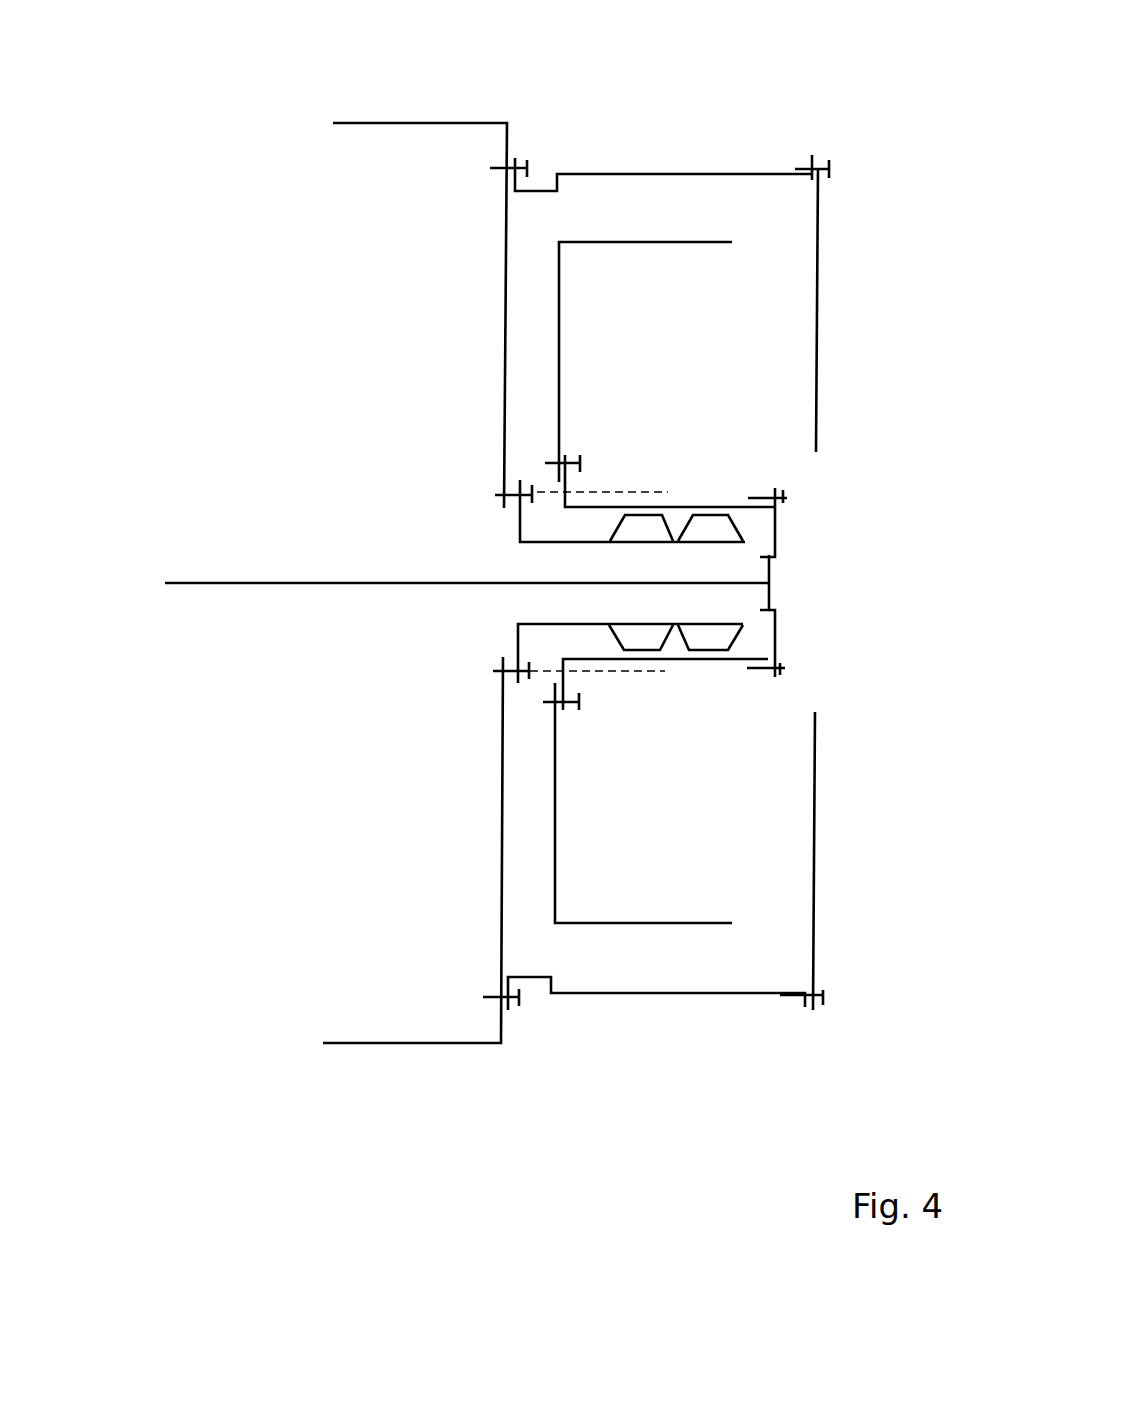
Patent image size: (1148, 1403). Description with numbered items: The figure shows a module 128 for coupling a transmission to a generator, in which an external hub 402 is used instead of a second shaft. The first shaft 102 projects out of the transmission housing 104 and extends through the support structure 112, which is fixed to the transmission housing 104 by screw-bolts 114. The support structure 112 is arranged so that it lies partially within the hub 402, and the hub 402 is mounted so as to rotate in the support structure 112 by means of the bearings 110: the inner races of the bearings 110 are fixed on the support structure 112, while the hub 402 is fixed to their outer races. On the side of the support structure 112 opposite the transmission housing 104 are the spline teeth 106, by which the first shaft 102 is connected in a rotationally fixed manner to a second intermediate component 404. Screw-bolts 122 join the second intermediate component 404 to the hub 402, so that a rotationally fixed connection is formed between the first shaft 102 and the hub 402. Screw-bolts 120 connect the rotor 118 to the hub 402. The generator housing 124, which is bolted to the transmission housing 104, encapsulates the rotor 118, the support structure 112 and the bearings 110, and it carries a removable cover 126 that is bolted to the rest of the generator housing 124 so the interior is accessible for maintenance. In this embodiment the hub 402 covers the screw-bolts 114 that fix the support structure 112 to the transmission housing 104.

The first shaft 102 is at (245, 583).
The transmission housing 104 is at (361, 123).
The spline teeth 106 is at (770, 605).
The bearings 110 is at (703, 528).
The support structure 112 is at (550, 622).
The screw-bolts 114 is at (530, 677).
The rotor 118 is at (633, 242).
The screw-bolts 120 is at (582, 460).
The screw-bolts 122 is at (785, 493).
The generator housing 124 is at (610, 174).
The removable cover 126 is at (813, 882).
The module 128 is at (709, 692).
The hub 402 is at (640, 505).
The second intermediate component 404 is at (777, 530).